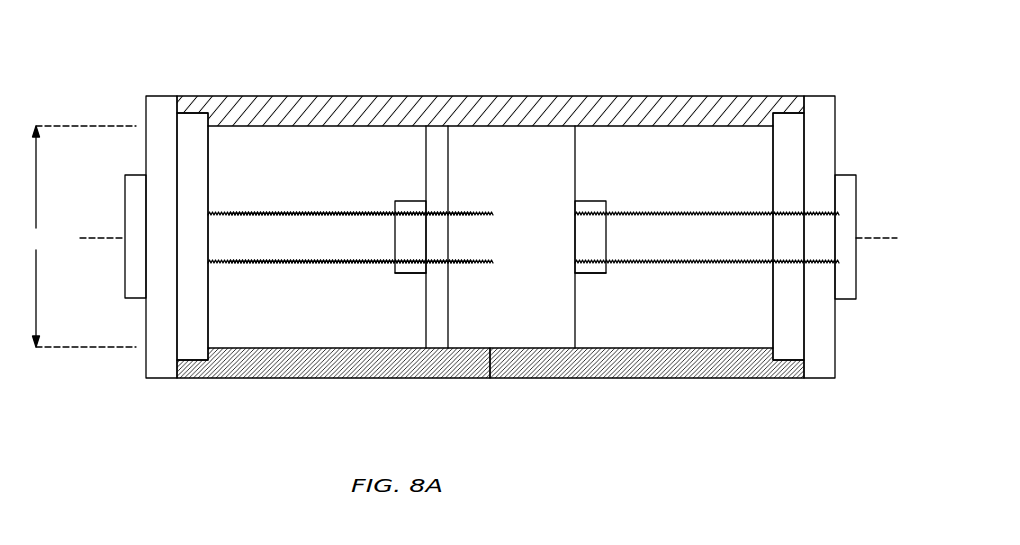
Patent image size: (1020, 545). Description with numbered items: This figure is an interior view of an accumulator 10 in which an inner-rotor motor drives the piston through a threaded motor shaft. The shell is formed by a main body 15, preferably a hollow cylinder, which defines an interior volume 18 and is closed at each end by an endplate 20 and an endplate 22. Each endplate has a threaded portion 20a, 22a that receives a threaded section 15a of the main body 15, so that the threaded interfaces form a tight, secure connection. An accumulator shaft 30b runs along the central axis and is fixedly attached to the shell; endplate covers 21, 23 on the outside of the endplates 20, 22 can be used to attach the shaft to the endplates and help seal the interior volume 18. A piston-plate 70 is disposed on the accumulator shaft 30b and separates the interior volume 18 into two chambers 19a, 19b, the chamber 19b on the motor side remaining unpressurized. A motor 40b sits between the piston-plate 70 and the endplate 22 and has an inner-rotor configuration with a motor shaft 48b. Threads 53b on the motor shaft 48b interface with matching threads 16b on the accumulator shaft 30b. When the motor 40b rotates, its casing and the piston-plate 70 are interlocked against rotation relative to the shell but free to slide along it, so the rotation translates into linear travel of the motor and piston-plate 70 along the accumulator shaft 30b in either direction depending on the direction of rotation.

The accumulator 10 is at (120, 62).
The main body 15 is at (531, 95).
The sections of the main body 15a is at (187, 96).
The threads on the accumulator shaft 16b is at (258, 212).
The interior volume 18 is at (325, 148).
The chamber 19a is at (340, 350).
The chamber 19b is at (623, 348).
The endplate 20 is at (163, 380).
The threaded portion 20a is at (208, 277).
The endplate cover 21 is at (125, 263).
The endplate 22 is at (818, 380).
The threaded portion 22a is at (775, 275).
The endplate cover 23 is at (857, 198).
The accumulator shaft 30b is at (675, 232).
The motor 40b is at (583, 328).
The motor shaft 48b is at (417, 275).
The threads on the motor shaft 53b is at (412, 207).
The piston-plate 70 is at (427, 333).